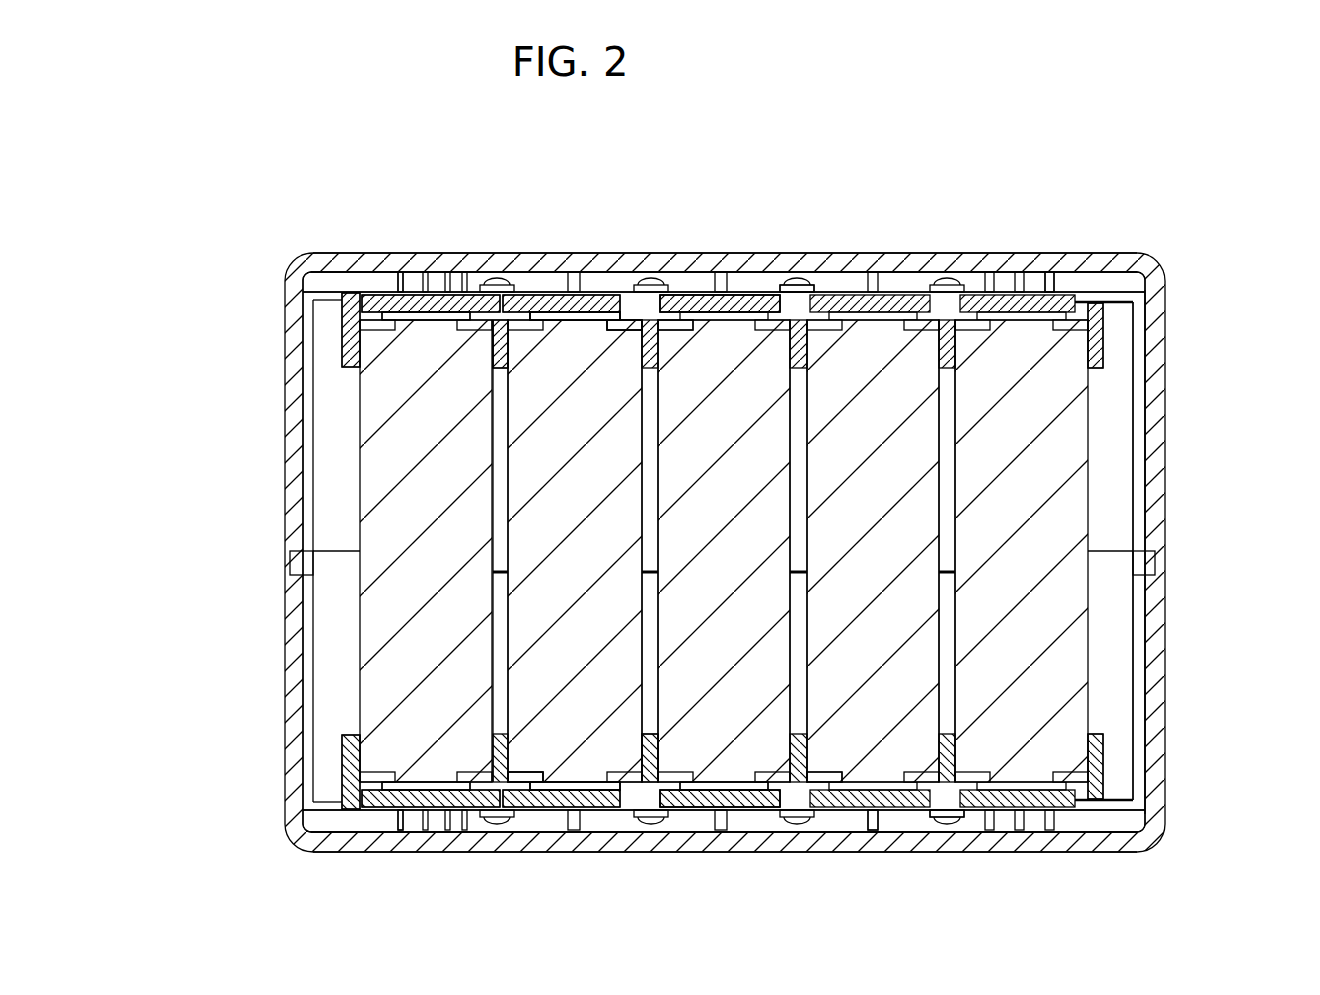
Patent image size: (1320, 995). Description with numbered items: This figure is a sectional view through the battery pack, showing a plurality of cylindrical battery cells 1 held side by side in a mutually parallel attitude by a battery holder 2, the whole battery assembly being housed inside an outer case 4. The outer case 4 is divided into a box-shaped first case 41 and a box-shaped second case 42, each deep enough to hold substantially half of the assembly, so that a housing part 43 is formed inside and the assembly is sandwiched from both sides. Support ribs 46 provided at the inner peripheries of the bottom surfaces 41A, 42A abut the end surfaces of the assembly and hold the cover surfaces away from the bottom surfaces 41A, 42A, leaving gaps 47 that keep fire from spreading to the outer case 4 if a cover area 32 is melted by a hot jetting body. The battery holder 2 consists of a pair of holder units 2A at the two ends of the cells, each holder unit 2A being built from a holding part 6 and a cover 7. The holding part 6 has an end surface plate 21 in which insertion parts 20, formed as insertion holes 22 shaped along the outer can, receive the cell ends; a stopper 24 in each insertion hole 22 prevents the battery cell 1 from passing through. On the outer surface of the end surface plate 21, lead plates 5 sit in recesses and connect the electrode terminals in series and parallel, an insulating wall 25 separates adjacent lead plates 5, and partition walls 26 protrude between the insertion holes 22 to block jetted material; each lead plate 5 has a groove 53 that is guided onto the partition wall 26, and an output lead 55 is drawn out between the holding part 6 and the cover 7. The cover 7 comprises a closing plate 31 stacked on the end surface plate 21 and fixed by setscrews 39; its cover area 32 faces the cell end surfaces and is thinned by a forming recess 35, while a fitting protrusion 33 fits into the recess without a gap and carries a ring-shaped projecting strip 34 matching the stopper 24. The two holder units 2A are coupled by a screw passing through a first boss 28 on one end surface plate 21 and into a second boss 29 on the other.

The battery cell 1 is at (1053, 592).
The battery holder 2 is at (153, 257).
The holder unit 2A is at (216, 187).
The outer case 4 is at (1203, 374).
The lead plate 5 is at (548, 318).
The holding part 6 is at (330, 338).
The cover 7 is at (375, 270).
The insertion part 20 is at (405, 312).
The insertion hole 22 is at (405, 312).
The end surface plate 21 is at (1103, 337).
The stopper 24 is at (656, 303).
The insulating wall 25 is at (680, 300).
The partition wall 26 is at (483, 352).
The first boss 28 is at (1117, 688).
The second boss 29 is at (1118, 488).
The closing plate 31 is at (612, 312).
The cover area 32 is at (590, 305).
The fitting protrusion 33 is at (703, 300).
The ring-shaped projecting strip 34 is at (625, 325).
The forming recess 35 is at (528, 300).
The setscrew 39 is at (800, 280).
The first case 41 is at (1058, 875).
The bottom surface of first case 41A is at (870, 845).
The second case 42 is at (1053, 208).
The bottom surface of second case 42A is at (885, 264).
The housing part 43 is at (1140, 432).
The support rib 46 is at (365, 293).
The gap 47 is at (904, 817).
The groove 53 is at (512, 330).
The output lead 55 is at (1118, 302).